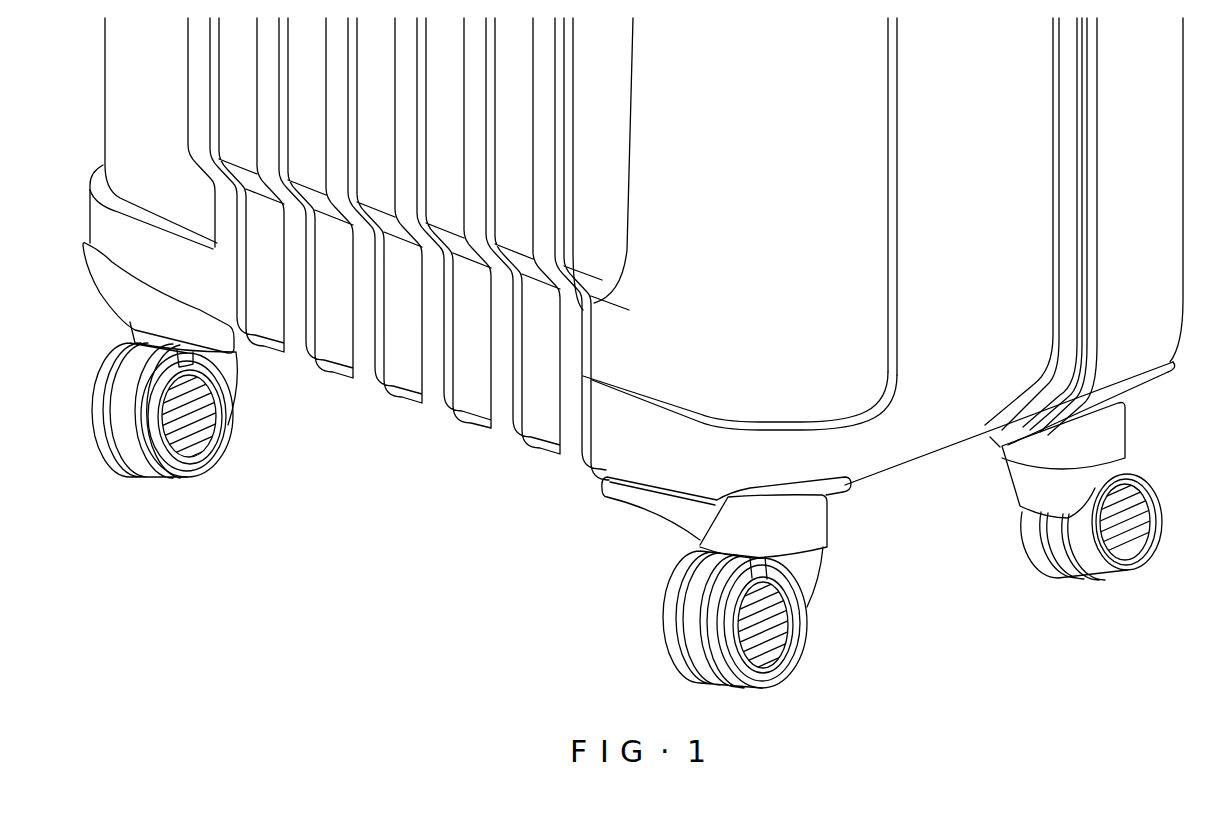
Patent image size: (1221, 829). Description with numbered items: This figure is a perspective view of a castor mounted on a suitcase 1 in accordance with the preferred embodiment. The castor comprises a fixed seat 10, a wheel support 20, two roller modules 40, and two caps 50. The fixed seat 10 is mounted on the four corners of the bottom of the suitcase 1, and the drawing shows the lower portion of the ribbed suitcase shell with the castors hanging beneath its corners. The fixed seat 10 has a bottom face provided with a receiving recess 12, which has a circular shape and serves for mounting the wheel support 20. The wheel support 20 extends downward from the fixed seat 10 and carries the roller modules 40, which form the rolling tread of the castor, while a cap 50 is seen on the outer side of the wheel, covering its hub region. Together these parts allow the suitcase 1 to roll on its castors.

The suitcase 1 is at (470, 403).
The fixed seat 10 is at (657, 503).
The receiving recess 12 is at (813, 523).
The wheel support 20 is at (836, 602).
The roller module 40 is at (670, 672).
The cap 50 is at (793, 637).